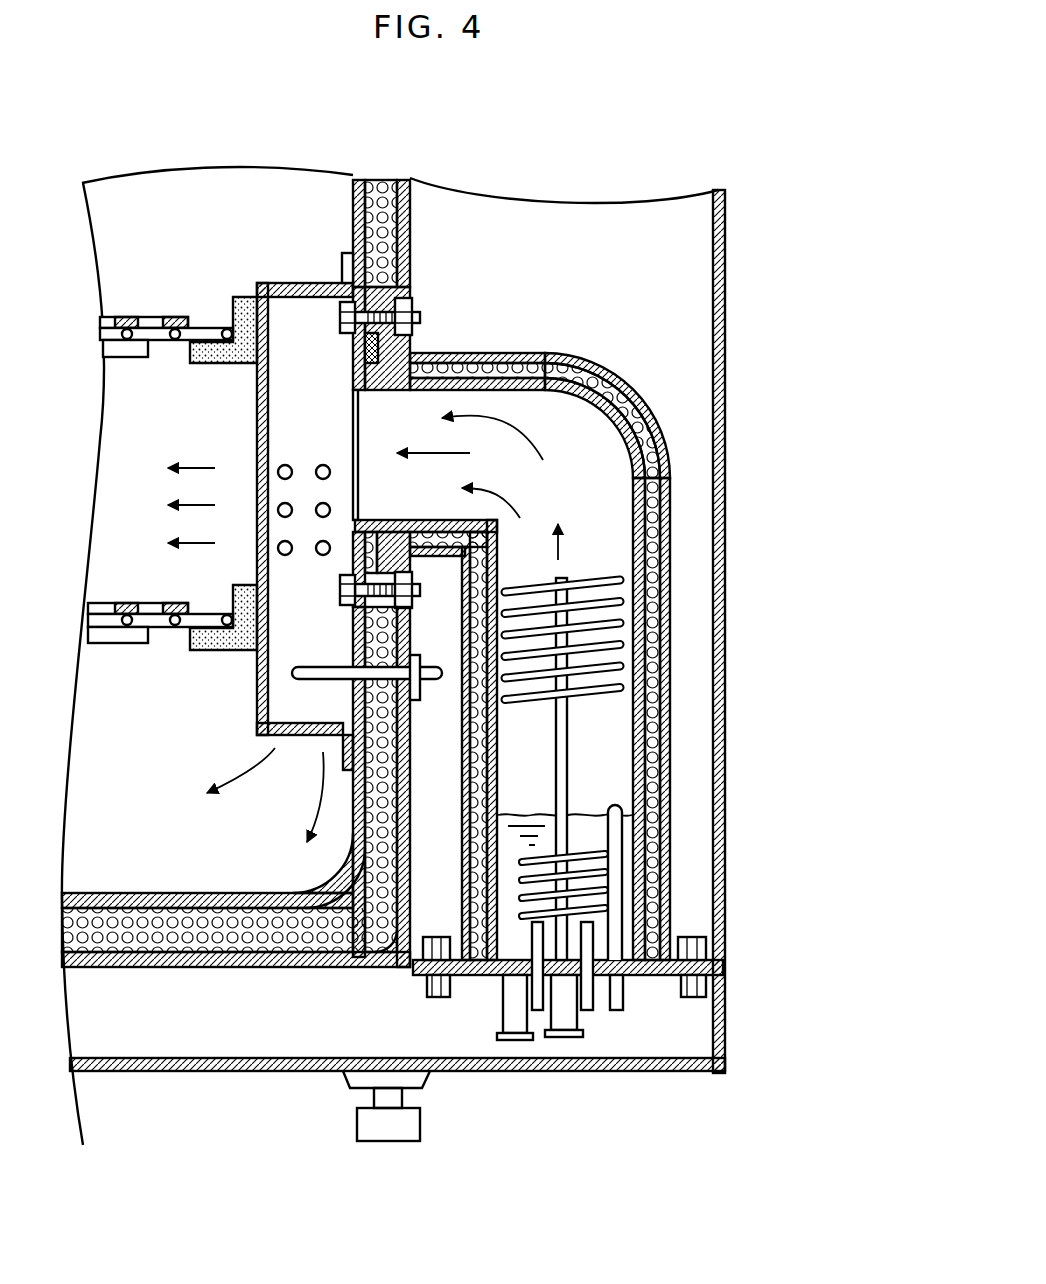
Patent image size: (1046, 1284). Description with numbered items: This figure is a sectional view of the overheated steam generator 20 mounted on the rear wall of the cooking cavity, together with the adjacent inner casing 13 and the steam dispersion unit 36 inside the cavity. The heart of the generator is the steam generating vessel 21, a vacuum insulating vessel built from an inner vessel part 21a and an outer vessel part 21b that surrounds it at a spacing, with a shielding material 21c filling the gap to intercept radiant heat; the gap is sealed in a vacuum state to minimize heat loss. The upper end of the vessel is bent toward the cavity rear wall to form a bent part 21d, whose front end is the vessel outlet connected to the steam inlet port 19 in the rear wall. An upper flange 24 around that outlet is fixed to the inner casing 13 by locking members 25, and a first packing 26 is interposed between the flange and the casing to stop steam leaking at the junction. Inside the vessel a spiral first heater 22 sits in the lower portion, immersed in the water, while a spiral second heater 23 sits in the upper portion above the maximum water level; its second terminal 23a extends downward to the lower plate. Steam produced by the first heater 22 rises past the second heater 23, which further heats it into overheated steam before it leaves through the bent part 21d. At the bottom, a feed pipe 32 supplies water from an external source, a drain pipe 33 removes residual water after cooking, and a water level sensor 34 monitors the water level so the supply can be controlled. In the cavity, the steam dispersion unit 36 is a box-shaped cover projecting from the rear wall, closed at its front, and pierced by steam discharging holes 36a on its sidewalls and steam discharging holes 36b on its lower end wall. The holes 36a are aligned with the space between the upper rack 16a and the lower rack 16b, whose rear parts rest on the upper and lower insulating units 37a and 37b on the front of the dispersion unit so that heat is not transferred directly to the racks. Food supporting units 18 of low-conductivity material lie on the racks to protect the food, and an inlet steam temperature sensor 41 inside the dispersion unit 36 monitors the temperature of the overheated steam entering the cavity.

The inner casing 13 is at (349, 193).
The food supporting unit 18 is at (128, 317).
The upper insulating unit 37a is at (242, 297).
The lower insulating unit 37b is at (236, 650).
The locking member 25 is at (343, 318).
The upper flange 24 is at (410, 343).
The bent part 21d is at (521, 357).
The overheated steam generator 20 is at (644, 350).
The first packing 26 is at (363, 360).
The steam dispersion unit 36 is at (250, 436).
The steam discharging holes 36a is at (280, 470).
The steam discharging holes 36b is at (279, 740).
The steam inlet port 19 is at (353, 525).
The inlet steam temperature sensor 41 is at (318, 667).
The upper rack 16a is at (178, 342).
The lower rack 16b is at (128, 642).
The steam generating vessel 21 is at (724, 695).
The inner vessel part 21a is at (647, 562).
The outer vessel part 21b is at (652, 590).
The shielding material 21c is at (650, 628).
The second heater 23 is at (597, 578).
The second terminal 23a is at (567, 768).
The first heater 22 is at (600, 862).
The water level sensor 34 is at (622, 912).
The drain pipe 33 is at (503, 1007).
The feed pipe 32 is at (575, 1017).